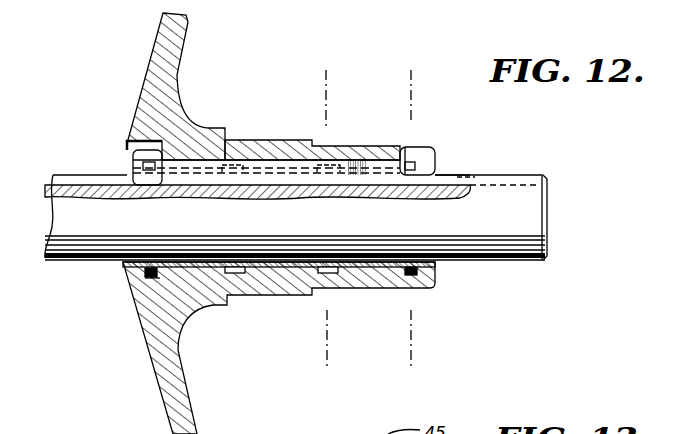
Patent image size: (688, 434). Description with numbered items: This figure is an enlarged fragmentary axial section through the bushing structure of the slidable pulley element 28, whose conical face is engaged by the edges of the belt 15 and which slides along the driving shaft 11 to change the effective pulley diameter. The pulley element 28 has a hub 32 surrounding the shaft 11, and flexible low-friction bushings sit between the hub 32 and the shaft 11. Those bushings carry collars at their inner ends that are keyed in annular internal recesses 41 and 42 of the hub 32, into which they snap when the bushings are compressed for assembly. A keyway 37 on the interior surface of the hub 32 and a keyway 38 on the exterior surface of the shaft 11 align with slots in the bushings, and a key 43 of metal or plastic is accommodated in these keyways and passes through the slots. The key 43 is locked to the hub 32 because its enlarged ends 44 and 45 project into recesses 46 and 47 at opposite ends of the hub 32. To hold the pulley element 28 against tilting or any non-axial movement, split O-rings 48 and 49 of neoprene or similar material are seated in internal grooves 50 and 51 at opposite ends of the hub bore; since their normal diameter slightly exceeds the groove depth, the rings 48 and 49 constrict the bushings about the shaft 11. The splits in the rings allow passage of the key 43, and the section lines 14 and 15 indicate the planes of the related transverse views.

The driving shaft 11 is at (296, 217).
The section line 14- 14 is at (335, 82).
The belt 15 is at (378, 82).
The pulley element 28 is at (148, 51).
The hub 32 is at (280, 140).
The keyway 37 is at (353, 160).
The keyway 38 is at (447, 183).
The annular internal recess 41 is at (238, 274).
The annular internal recess 42 is at (333, 273).
The key 43 is at (258, 163).
The enlarged end 44 is at (130, 162).
The enlarged end 45 is at (423, 158).
The recess 46 is at (128, 146).
The recess 47 is at (405, 147).
The split O-ring 48 is at (143, 272).
The split O-ring 49 is at (417, 270).
The internal groove 50 is at (158, 277).
The internal groove 51 is at (407, 272).